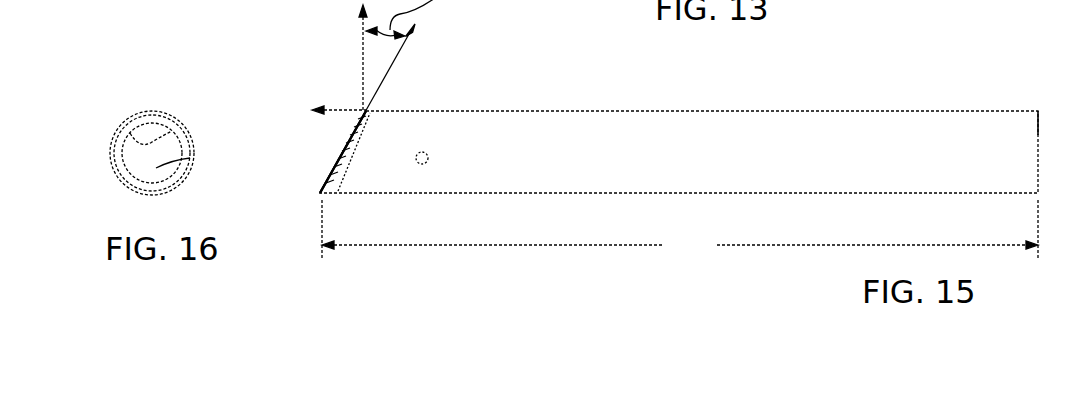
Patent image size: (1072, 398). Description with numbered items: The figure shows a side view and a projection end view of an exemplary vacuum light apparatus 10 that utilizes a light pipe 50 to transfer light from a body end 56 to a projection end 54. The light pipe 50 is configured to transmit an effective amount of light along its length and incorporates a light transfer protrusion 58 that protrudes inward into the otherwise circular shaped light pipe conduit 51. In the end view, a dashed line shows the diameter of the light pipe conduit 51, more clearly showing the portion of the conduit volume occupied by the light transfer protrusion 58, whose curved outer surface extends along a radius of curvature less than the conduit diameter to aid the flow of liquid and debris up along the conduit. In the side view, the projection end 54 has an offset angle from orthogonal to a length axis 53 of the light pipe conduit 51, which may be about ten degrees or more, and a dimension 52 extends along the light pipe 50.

In FIG. 15, the vacuum light apparatus 10 is at (858, 96).
In FIG. 16, the light pipe 50 is at (168, 107).
In FIG. 15, the light pipe 50 is at (763, 148).
In FIG. 16, the light pipe conduit 51 is at (190, 158).
In FIG. 15, the length of blade 52 is at (680, 232).
In FIG. 15, the length axis 53 is at (337, 108).
In FIG. 15, the projection end 54 is at (352, 125).
In FIG. 15, the body end 56 is at (1040, 123).
In FIG. 16, the light transfer protrusion 58 is at (150, 134).